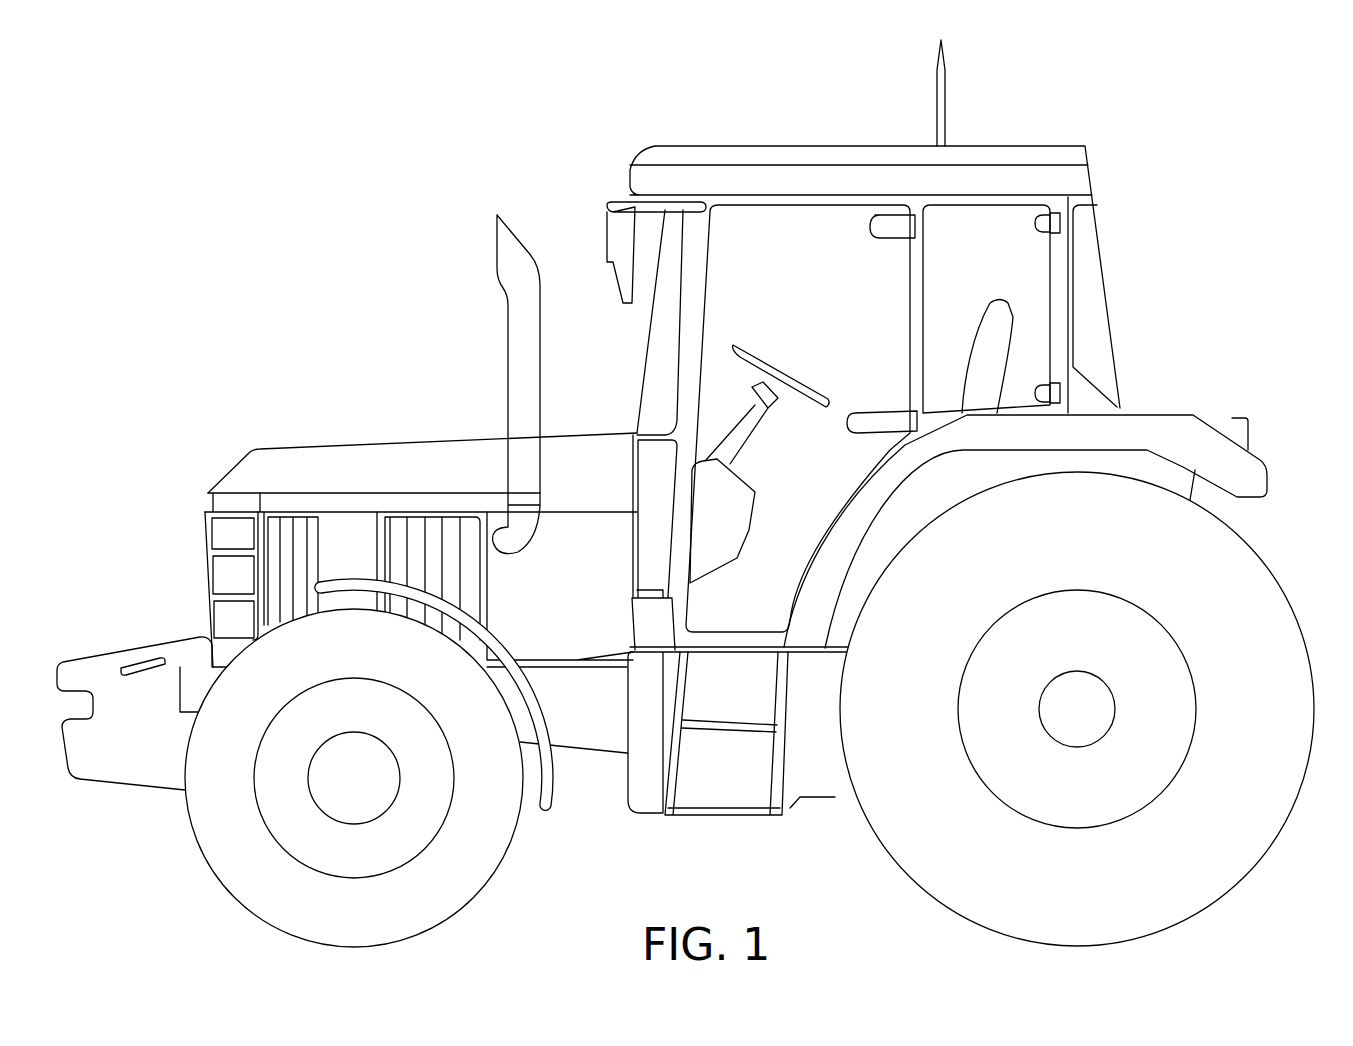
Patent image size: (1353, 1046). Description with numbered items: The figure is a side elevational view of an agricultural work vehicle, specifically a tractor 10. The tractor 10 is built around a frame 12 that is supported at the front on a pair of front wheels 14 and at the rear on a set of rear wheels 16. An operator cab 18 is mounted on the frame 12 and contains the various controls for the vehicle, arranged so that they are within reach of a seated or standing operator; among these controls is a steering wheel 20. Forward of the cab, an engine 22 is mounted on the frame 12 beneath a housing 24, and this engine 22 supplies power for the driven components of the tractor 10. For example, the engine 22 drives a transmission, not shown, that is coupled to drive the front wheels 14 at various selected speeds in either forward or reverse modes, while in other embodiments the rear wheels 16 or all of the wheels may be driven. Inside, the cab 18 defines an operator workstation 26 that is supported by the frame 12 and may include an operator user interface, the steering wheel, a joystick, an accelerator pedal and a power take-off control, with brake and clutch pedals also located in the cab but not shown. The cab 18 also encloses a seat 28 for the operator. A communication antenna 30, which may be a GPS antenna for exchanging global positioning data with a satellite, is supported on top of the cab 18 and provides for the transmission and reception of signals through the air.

The tractor 10 is at (705, 493).
The frame 12 is at (587, 740).
The front wheels 14 is at (478, 870).
The rear wheels 16 is at (1238, 870).
The operator cab 18 is at (863, 345).
The steering wheel 20 is at (738, 347).
The engine 22 is at (403, 522).
The housing 24 is at (267, 443).
The operator workstation 26 is at (733, 527).
The seat 28 is at (995, 312).
The communication antenna 30 is at (946, 125).